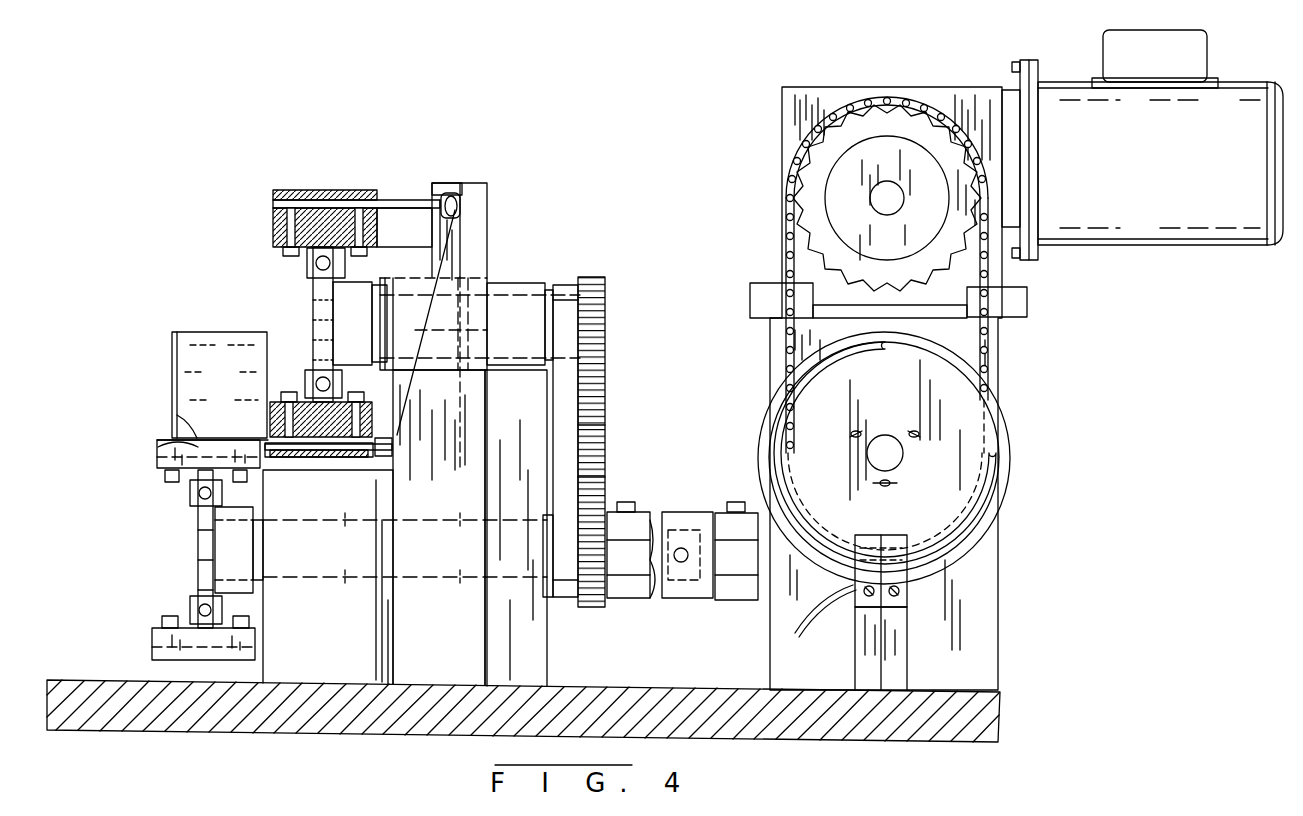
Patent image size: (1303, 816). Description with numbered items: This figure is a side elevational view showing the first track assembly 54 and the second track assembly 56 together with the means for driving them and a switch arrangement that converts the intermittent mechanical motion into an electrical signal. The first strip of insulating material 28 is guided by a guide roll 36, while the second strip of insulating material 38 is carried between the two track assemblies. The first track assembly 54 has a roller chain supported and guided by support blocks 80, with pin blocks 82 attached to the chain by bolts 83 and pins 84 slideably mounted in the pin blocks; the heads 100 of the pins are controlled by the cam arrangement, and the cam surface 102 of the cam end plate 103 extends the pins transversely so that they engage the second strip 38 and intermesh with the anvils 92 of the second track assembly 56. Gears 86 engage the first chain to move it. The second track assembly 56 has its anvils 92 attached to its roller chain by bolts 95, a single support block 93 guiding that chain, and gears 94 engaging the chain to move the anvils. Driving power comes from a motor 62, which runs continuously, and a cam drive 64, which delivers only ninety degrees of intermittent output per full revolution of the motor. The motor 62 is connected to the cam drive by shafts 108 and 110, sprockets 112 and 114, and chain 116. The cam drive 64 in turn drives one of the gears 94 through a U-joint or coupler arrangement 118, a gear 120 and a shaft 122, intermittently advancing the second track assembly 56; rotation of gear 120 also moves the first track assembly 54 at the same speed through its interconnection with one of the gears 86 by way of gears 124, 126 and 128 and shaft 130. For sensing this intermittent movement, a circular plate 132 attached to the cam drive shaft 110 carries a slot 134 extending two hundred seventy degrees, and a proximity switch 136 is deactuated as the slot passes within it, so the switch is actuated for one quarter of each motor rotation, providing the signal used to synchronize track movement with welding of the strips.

The first strip of insulating material 28 is at (190, 428).
The guide roll 36 is at (200, 370).
The second strip of insulating material 38 is at (160, 442).
The first track assembly 54 is at (298, 293).
The second track assembly 56 is at (150, 574).
The motor 62 is at (1127, 235).
The cam drive 64 is at (1000, 565).
The support block 80 is at (318, 282).
The pin block 82 is at (342, 190).
The bolt 83 is at (283, 230).
The pin 84 is at (391, 200).
The gear 86 is at (336, 303).
The anvil 92 is at (157, 452).
The support block 93 is at (252, 497).
The gear 94 is at (198, 558).
The bolt 95 is at (165, 476).
The pin head 100 is at (448, 194).
The cam surface 102 is at (490, 255).
The cam end plate 103 is at (490, 222).
The shaft 108 is at (875, 193).
The cam drive shaft 110 is at (887, 440).
The sprocket 112 is at (815, 216).
The sprocket 114 is at (975, 374).
The chain 116 is at (990, 330).
The U-joint or coupler arrangement 118 is at (680, 600).
The gear 120 is at (583, 608).
The shaft 122 is at (444, 580).
The gear 124 is at (603, 477).
The gear 126 is at (605, 425).
The gear 128 is at (605, 308).
The shaft 130 is at (500, 298).
The circular plate 132 is at (1011, 452).
The slot 134 is at (990, 517).
The proximity switch 136 is at (905, 588).